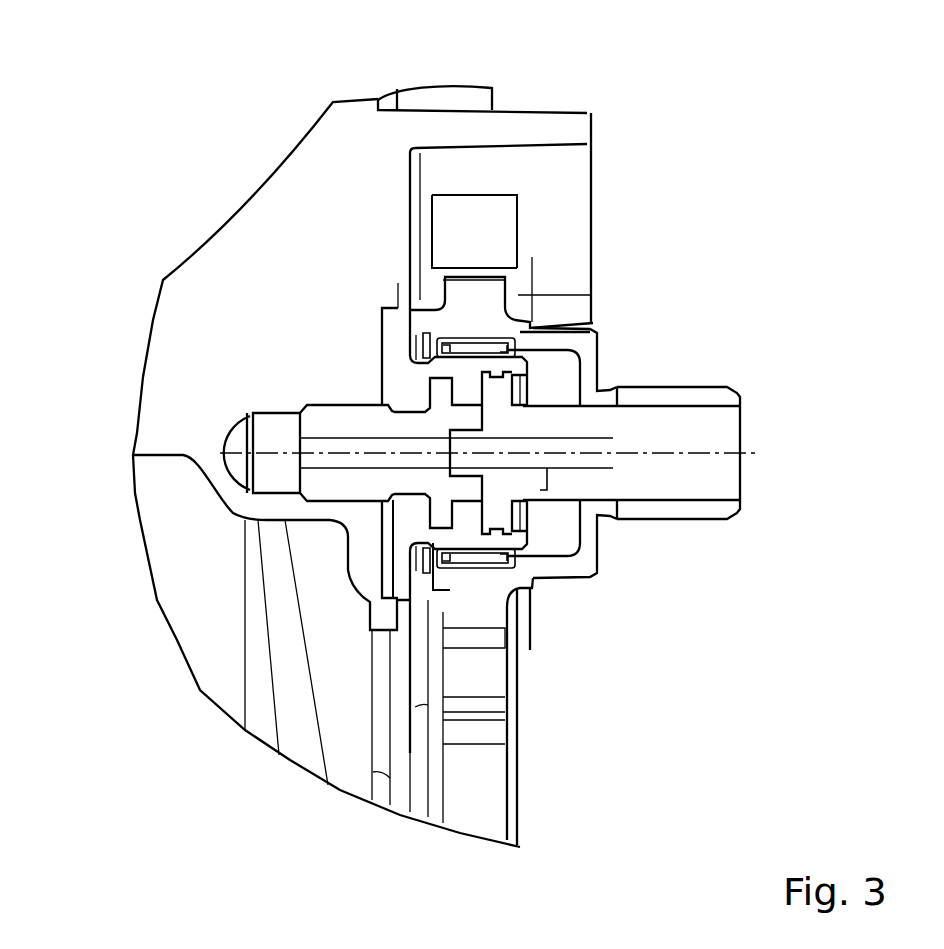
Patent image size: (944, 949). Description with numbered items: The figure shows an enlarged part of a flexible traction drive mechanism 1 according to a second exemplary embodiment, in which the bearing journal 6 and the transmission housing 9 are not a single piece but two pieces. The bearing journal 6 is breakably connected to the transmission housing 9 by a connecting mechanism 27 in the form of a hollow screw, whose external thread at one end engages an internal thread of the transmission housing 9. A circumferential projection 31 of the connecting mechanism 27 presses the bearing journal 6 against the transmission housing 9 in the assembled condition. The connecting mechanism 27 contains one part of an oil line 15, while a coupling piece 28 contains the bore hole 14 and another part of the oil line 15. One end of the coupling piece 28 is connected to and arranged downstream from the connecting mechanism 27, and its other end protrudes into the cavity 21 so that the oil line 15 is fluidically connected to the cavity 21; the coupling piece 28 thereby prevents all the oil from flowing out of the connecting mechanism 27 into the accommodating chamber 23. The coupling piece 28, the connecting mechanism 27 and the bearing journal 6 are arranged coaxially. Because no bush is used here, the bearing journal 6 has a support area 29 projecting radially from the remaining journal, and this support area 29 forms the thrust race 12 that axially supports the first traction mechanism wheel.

The flexible traction drive mechanism 1 is at (440, 190).
The bearing journal 6 is at (412, 388).
The transmission housing 9 is at (315, 233).
The thrust race 12 is at (399, 310).
The bore hole 14 is at (547, 485).
The oil line 15 is at (358, 445).
The cavity 21 is at (700, 482).
The accommodating chamber 23 is at (548, 532).
The connecting mechanism 27 is at (360, 483).
The coupling piece 28 is at (543, 427).
The support area 29 is at (388, 332).
The circumferential projection 31 is at (447, 508).